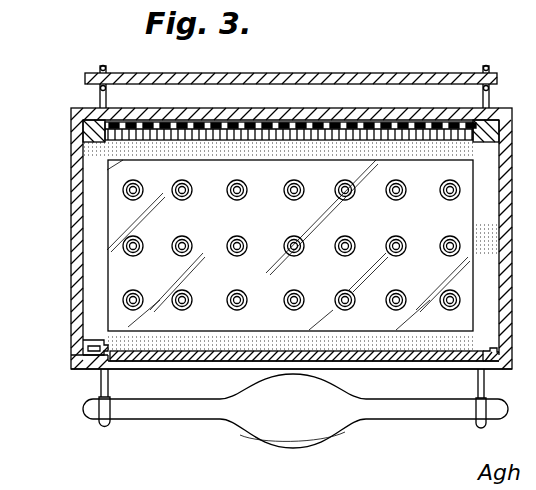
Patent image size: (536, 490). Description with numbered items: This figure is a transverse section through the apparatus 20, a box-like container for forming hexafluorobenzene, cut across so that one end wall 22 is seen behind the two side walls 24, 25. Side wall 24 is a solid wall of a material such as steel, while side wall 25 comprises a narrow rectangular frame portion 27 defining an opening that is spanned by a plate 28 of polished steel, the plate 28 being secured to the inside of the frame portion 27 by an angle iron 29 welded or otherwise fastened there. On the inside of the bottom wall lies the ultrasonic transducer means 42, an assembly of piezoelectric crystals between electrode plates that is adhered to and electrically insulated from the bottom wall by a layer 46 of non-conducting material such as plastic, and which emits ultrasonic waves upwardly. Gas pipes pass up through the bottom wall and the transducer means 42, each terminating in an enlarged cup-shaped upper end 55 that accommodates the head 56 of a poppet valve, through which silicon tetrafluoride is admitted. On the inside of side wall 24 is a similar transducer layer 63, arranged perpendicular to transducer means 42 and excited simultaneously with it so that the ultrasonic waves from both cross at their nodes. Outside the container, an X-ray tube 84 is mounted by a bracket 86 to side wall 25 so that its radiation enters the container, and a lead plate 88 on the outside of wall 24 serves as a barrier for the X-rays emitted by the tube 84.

The apparatus 20 is at (71, 157).
The end wall 22 is at (71, 211).
The side wall 24 is at (298, 110).
The side wall 25 is at (118, 368).
The frame portion 27 is at (493, 371).
The plate 28 is at (403, 358).
The angle iron 29 is at (87, 343).
The ultrasonic transducer means 42 is at (249, 245).
The layer of non-conducting material 46 is at (90, 252).
The cup-shaped upper end 55 is at (182, 200).
The head of poppet valve 56 is at (244, 266).
The transducer layer 63 is at (308, 141).
The X-ray tube 84 is at (318, 432).
The bracket 86 is at (100, 386).
The lead plate 88 is at (383, 73).